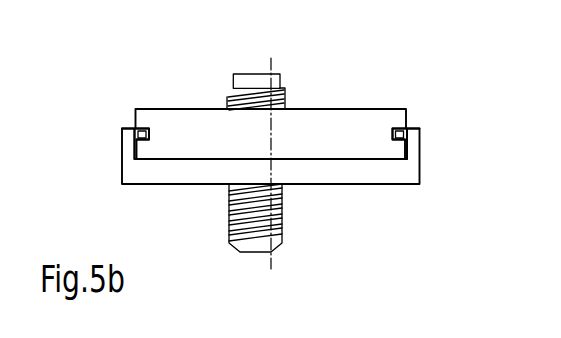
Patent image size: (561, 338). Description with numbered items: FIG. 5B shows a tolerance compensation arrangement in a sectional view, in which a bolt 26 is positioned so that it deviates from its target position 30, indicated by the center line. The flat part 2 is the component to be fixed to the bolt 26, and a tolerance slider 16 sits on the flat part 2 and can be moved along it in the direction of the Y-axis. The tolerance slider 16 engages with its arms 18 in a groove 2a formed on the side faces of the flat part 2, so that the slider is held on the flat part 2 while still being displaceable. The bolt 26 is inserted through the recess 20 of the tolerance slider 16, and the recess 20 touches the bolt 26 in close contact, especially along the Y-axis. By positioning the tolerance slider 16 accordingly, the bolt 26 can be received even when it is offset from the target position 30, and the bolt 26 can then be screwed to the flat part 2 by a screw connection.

The flat part 2 is at (183, 122).
The groove 2a is at (127, 128).
The tolerance slider 16 is at (359, 172).
The arms 18 is at (132, 142).
The recess 20 is at (122, 158).
The bolt 26 is at (232, 218).
The target position 30 is at (272, 133).